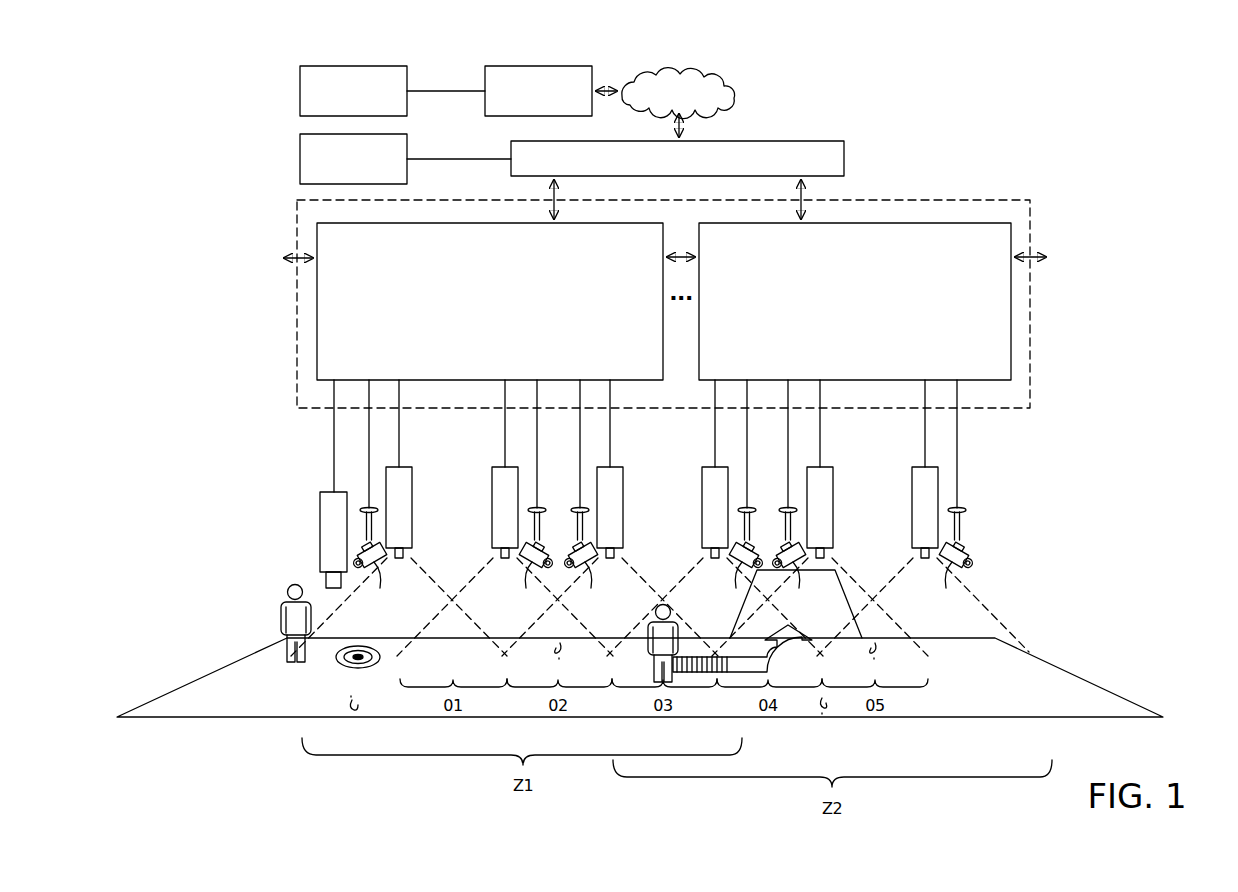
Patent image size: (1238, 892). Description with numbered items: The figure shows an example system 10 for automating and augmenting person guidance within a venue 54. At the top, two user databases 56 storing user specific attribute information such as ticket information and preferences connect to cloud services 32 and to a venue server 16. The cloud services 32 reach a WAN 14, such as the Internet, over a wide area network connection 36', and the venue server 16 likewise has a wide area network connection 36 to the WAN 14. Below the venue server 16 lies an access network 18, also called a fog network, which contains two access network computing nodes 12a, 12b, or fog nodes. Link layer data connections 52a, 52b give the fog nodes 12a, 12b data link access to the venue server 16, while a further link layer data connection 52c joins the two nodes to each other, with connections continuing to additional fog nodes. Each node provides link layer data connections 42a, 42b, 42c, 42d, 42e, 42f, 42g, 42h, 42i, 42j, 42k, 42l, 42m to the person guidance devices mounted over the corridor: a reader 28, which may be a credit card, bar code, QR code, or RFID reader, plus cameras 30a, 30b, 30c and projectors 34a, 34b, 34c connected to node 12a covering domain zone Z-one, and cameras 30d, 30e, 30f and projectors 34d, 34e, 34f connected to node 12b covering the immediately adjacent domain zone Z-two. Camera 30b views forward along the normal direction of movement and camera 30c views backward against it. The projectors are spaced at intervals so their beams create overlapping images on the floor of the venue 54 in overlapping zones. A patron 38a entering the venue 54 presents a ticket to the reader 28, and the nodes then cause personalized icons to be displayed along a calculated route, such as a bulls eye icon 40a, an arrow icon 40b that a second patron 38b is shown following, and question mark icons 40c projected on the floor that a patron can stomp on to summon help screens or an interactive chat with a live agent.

The system 10 is at (1066, 164).
The user database 56 is at (300, 93).
The cloud services 32 is at (485, 75).
The wide area network connection 36' is at (612, 67).
The WAN 14 is at (730, 89).
The wide area network connection 36 is at (703, 125).
The venue server 16 is at (844, 159).
The link layer data connection 52a is at (552, 196).
The link layer data connection 52b is at (803, 196).
The link layer data connection 52c is at (682, 254).
The access network 18 is at (957, 199).
The access network computing node 12a is at (317, 316).
The access network computing node 12b is at (1011, 320).
The link layer data connection 42a is at (334, 463).
The link layer data connection 42b is at (369, 490).
The link layer data connection 42c is at (399, 405).
The link layer data connection 42d is at (505, 392).
The link layer data connection 42e is at (537, 405).
The link layer data connection 42f is at (580, 442).
The link layer data connection 42g is at (610, 388).
The link layer data connection 42h is at (715, 402).
The link layer data connection 42i is at (747, 437).
The link layer data connection 42j is at (788, 413).
The link layer data connection 42k is at (820, 402).
The link layer data connection 42l is at (925, 433).
The link layer data connection 42m is at (957, 403).
The reader 28 is at (320, 530).
The projector 34a is at (413, 494).
The projector 34b is at (492, 527).
The projector 34c is at (624, 494).
The projector 34d is at (702, 527).
The projector 34e is at (834, 494).
The projector 34f is at (938, 497).
The camera 30a is at (372, 560).
The camera 30b is at (532, 560).
The camera 30c is at (584, 560).
The camera 30d is at (741, 557).
The camera 30e is at (792, 559).
The camera 30f is at (954, 558).
The venue 54 is at (1057, 667).
The patron 38a is at (281, 613).
The patron 38b is at (671, 611).
The bulls eye icon 40a is at (342, 665).
The arrow icon 40b is at (800, 659).
The question mark icon 40c is at (360, 708).